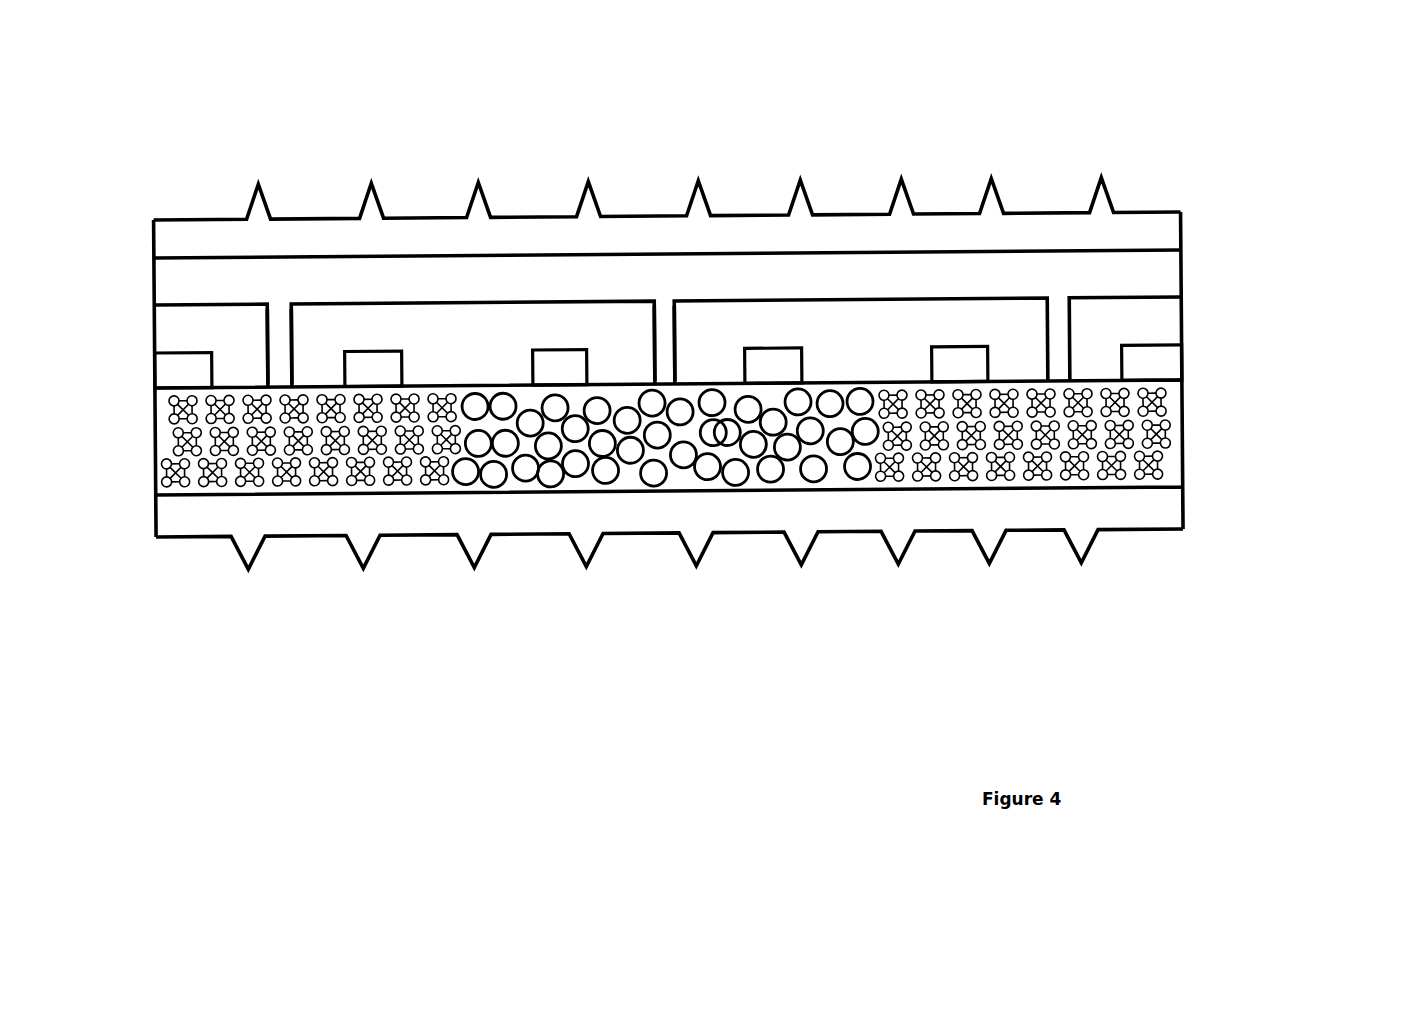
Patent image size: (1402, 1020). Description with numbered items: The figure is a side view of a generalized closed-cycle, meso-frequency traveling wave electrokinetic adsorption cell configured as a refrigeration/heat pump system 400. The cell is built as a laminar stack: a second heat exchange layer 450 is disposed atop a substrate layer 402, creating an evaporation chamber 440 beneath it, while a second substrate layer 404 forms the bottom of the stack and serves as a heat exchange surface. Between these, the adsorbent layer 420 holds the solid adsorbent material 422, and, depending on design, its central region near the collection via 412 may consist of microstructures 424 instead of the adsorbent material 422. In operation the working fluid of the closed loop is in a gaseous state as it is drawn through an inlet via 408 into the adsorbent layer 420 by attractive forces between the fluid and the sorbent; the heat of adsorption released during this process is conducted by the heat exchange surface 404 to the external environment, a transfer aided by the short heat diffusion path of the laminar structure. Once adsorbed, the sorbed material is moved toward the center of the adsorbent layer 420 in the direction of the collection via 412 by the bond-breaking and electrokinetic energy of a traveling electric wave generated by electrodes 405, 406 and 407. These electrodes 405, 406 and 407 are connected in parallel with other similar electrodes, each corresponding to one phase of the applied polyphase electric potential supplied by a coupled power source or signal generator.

The closed-cycle refrigeration/heat pump system 400 is at (1290, 381).
The substrate layer 402 is at (455, 350).
The second substrate layer 404 is at (205, 523).
The electrode 405 is at (175, 378).
The electrode 406 is at (362, 359).
The electrode 407 is at (565, 364).
The inlet via 408 is at (280, 319).
The collection via 412 is at (662, 320).
The adsorbent layer 420 is at (165, 452).
The adsorbent material 422 is at (1182, 450).
The microstructures 424 is at (654, 484).
The evaporation chamber 440 is at (185, 282).
The second heat exchange layer 450 is at (180, 228).